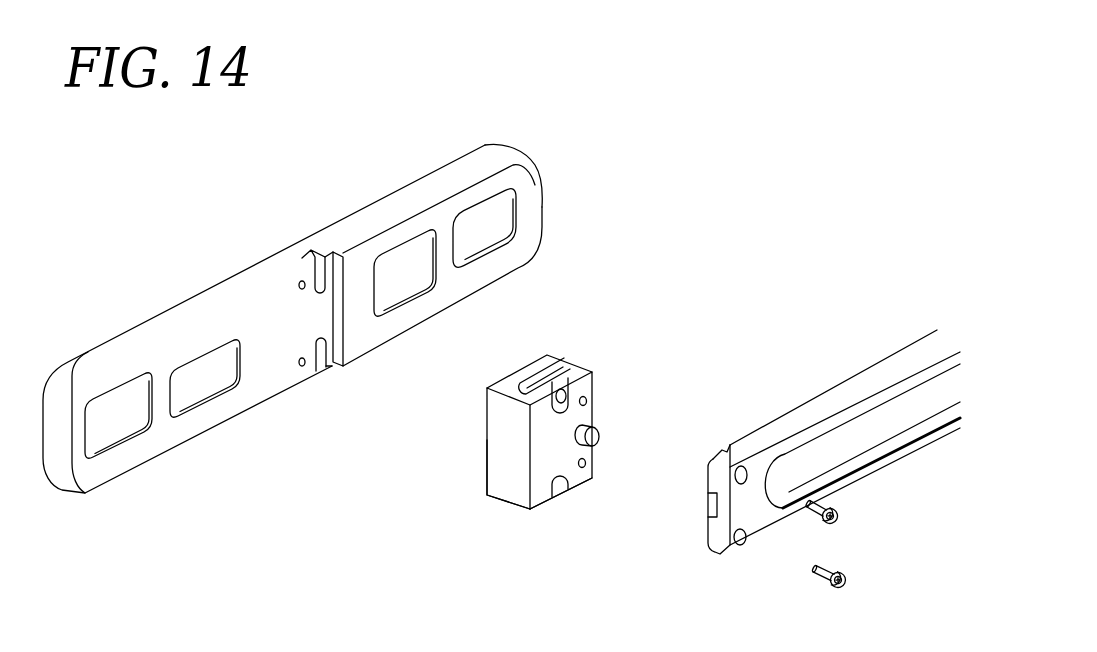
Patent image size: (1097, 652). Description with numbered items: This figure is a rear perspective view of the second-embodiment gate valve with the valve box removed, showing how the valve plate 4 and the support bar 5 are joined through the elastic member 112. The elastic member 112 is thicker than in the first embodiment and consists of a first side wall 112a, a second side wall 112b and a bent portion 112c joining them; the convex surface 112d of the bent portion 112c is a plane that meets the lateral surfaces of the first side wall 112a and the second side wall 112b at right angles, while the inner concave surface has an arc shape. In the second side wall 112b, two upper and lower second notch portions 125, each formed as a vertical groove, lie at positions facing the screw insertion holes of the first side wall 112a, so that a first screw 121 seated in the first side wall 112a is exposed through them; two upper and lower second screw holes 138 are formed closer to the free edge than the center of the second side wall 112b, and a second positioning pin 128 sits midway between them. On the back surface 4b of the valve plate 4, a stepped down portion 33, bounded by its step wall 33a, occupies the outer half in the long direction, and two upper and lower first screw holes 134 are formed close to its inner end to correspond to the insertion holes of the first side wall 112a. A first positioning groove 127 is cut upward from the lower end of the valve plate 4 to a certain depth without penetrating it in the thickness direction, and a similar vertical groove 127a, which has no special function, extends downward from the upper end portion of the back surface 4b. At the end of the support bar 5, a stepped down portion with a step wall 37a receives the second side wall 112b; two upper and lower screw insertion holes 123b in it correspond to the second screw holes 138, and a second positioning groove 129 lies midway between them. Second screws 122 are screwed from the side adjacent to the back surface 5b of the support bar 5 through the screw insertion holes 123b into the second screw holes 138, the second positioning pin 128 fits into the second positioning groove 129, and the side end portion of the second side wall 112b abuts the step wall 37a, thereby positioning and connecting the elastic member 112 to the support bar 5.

The valve plate 4 is at (437, 230).
The back surface of the valve plate 4b is at (445, 228).
The support bar 5 is at (804, 447).
The back surface of the support bar 5b is at (905, 451).
The stepped down portion 33 is at (258, 325).
The end portion of arm member 33a is at (337, 307).
The step wall 37a is at (721, 447).
The elastic member 112 is at (521, 438).
The first side wall 112a is at (553, 370).
The second side wall 112b is at (538, 474).
The bent portion 112c is at (487, 418).
The convex surface 112d is at (495, 445).
The pin 121 is at (566, 380).
The second screw 122 is at (850, 584).
The screw insertion holes 123b is at (746, 467).
The second notch portions 125 is at (572, 408).
The first positioning groove 127 is at (321, 373).
The vertical groove 127a is at (319, 257).
The second positioning pin 128 is at (598, 440).
The second positioning groove 129 is at (714, 505).
The first screw holes 134 is at (299, 283).
The second screw holes 138 is at (587, 400).